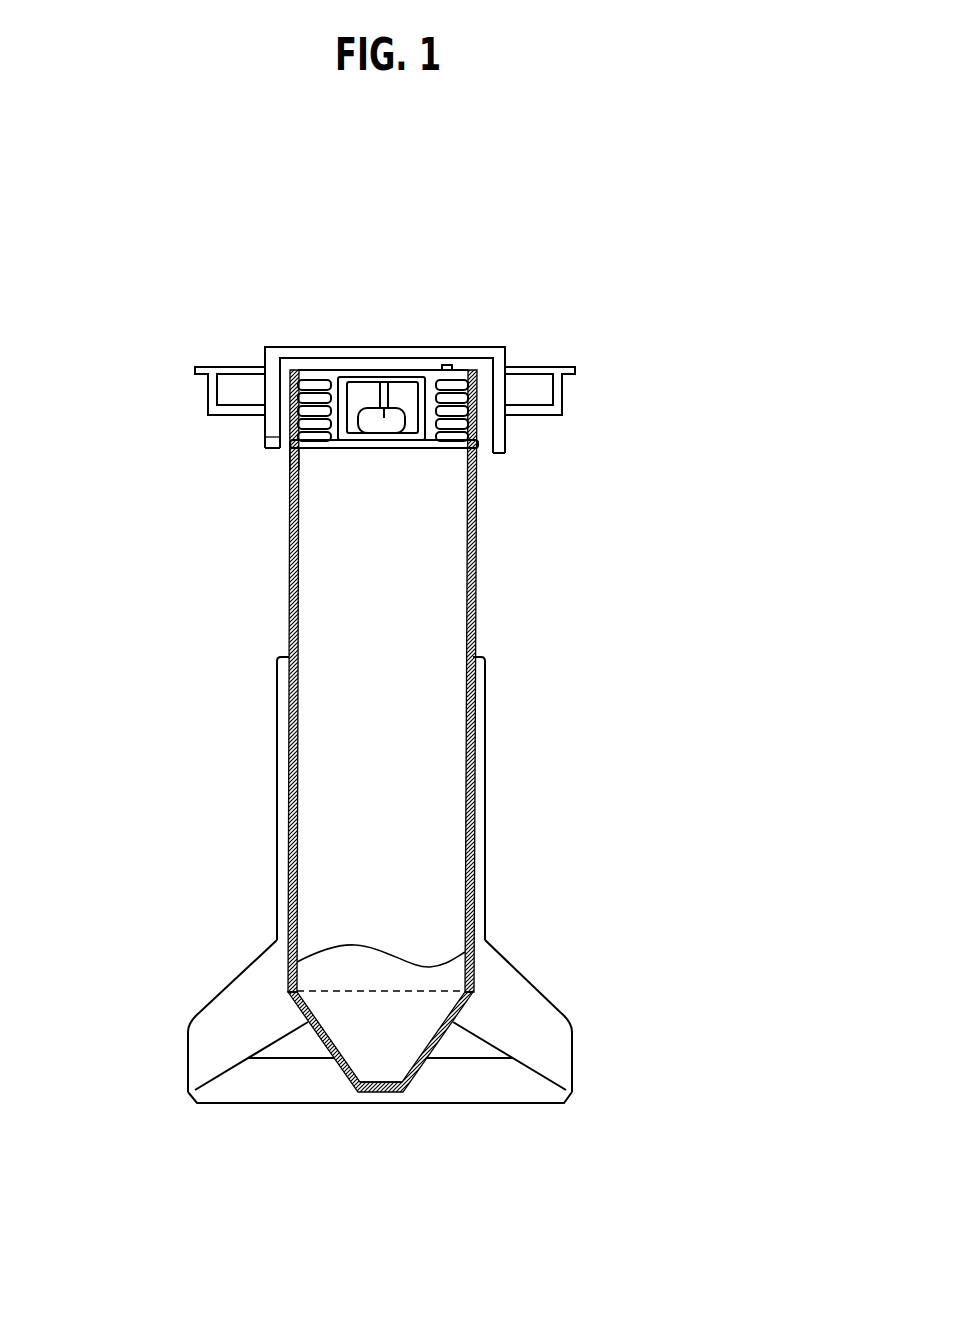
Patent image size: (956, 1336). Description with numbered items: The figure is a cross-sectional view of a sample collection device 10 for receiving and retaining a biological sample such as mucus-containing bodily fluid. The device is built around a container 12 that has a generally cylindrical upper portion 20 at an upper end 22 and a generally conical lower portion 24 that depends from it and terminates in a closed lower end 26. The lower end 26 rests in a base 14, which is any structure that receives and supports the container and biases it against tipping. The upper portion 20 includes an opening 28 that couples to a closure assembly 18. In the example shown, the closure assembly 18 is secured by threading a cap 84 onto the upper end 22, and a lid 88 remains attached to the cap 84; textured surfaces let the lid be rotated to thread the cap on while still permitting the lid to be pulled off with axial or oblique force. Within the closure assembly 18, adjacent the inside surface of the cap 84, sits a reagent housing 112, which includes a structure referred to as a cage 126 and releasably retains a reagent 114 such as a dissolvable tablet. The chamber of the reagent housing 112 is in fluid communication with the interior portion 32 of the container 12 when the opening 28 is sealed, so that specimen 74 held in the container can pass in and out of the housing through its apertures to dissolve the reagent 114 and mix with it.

The sample collection device 10 is at (523, 150).
The upper end 22 is at (158, 270).
The closure assembly 18 is at (487, 331).
The lid 88 is at (529, 372).
The cap 84 is at (320, 377).
The reagent 114 is at (393, 380).
The cage 126 is at (352, 422).
The reagent housing 112 is at (427, 448).
The container 12 is at (477, 575).
The opening 28 is at (280, 466).
The interior portion 32 is at (373, 628).
The specimen 74 is at (365, 1043).
The lower portion 24 is at (418, 1072).
The upper portion 20 is at (477, 622).
The base 14 is at (513, 975).
The lower end 26 is at (302, 1153).